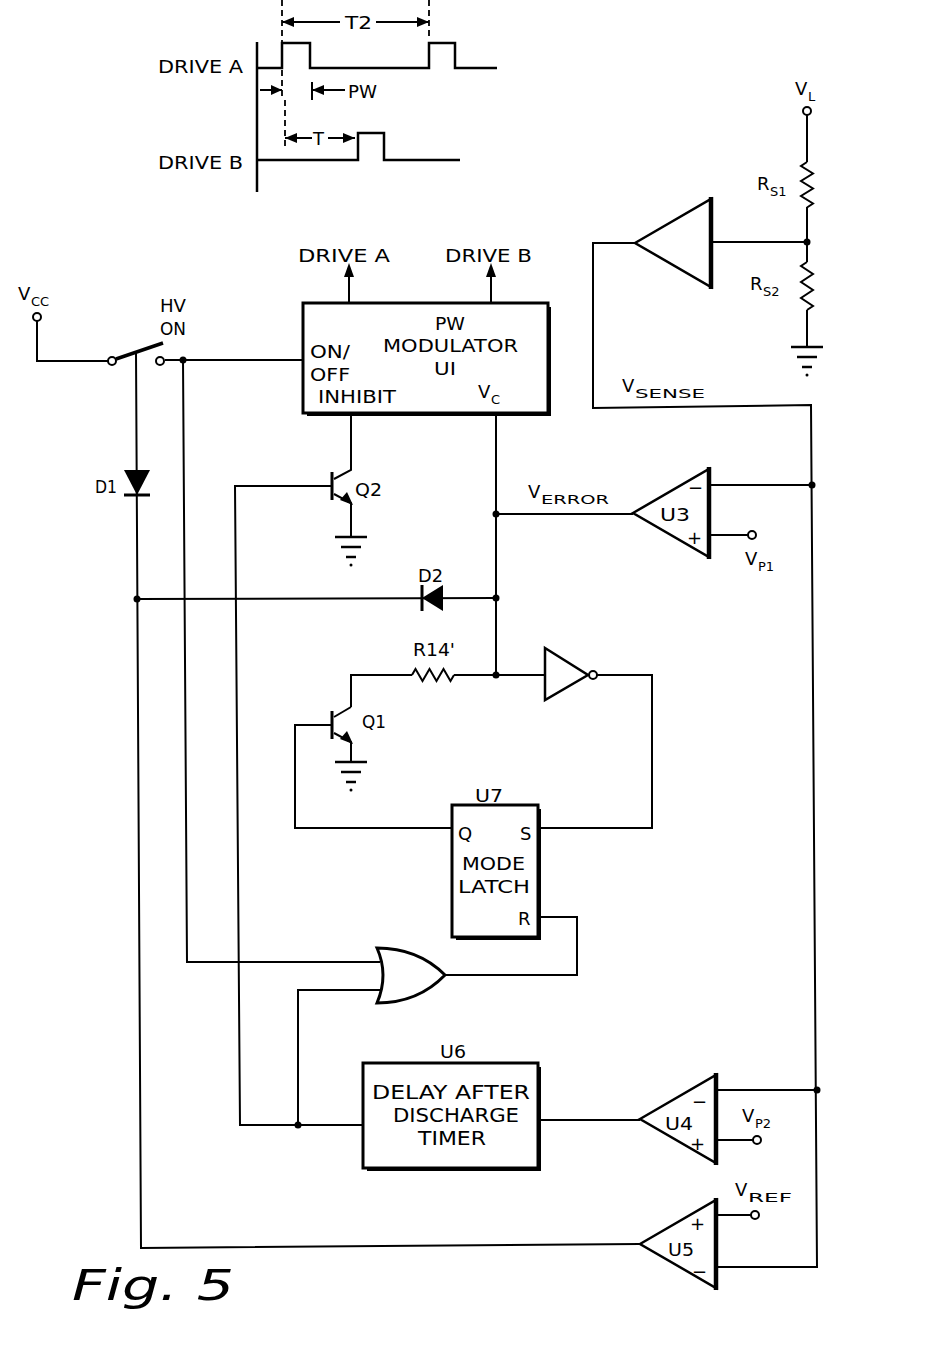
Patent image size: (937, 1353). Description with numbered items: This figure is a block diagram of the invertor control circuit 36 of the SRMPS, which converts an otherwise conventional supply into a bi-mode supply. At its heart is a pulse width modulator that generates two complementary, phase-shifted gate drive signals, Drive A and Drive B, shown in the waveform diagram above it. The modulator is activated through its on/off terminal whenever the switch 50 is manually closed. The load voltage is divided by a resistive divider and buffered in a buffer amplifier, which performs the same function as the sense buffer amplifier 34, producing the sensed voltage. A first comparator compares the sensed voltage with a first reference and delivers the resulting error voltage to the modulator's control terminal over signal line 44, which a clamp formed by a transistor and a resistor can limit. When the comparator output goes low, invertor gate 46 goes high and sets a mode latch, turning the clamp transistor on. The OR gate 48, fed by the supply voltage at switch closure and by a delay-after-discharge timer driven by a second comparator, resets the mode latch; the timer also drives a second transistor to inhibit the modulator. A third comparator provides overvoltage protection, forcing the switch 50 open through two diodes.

The sense buffer amplifier 34 is at (676, 196).
The invertor control circuit 36 is at (103, 1128).
The signal line 44 is at (497, 470).
The invertor gate 46 is at (573, 658).
The OR gate 48 is at (405, 950).
The switch 50 is at (136, 350).